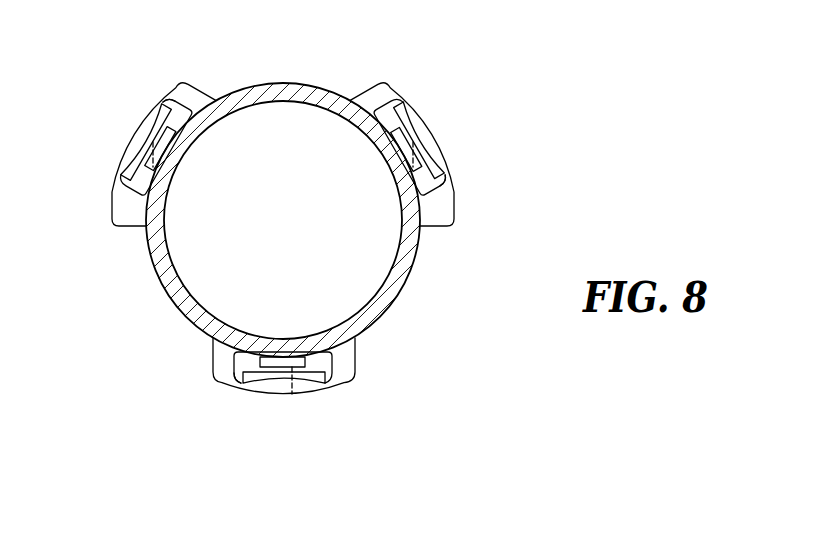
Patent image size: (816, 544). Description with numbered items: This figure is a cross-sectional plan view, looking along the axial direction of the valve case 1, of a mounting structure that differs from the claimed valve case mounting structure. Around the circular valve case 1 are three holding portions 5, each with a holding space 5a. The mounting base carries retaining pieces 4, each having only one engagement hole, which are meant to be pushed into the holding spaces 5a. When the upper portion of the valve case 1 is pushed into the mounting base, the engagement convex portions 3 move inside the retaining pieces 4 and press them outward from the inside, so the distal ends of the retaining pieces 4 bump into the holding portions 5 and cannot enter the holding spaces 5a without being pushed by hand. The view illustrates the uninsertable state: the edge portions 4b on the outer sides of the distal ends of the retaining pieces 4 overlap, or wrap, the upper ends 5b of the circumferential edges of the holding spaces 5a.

The valve case 1 is at (393, 294).
The engagement convex portions 3 is at (292, 394).
The retaining pieces 4 is at (258, 390).
The edge portions 4b is at (276, 392).
The holding portions 5 is at (333, 393).
The holding spaces 5a is at (240, 369).
The upper ends 5b is at (236, 384).